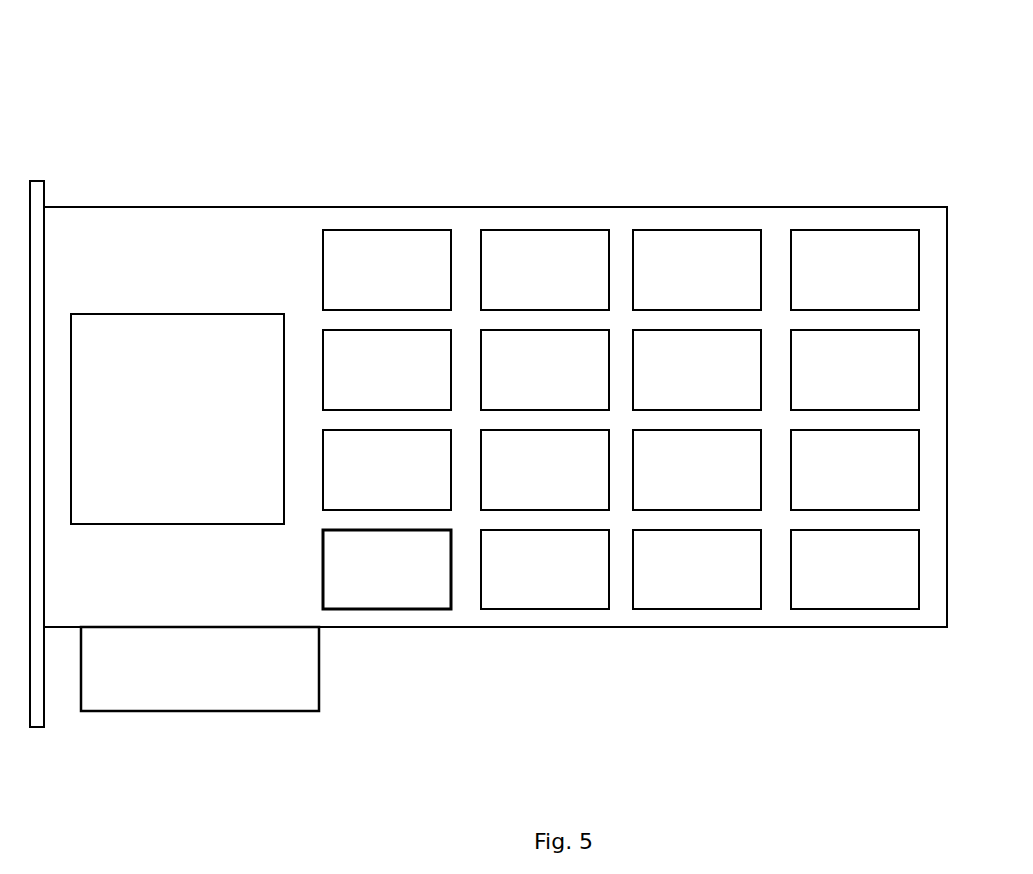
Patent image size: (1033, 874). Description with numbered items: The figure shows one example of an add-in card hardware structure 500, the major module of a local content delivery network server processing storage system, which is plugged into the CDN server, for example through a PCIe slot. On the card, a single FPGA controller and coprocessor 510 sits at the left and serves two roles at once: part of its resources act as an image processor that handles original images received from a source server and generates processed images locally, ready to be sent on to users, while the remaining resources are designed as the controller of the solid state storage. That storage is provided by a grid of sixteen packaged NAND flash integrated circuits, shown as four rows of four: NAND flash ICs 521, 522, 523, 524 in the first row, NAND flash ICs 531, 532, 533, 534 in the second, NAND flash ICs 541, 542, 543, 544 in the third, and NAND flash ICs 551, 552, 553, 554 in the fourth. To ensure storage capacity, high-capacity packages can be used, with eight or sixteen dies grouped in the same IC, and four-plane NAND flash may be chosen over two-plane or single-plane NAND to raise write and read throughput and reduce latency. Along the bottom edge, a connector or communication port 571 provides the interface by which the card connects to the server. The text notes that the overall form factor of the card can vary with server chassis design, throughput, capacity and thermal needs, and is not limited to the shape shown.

The add-in card hardware structure 500 is at (570, 38).
The FPGA controller and coprocessor 510 is at (177, 419).
The packaged NAND flash integrated circuit 521 is at (387, 270).
The packaged NAND flash integrated circuit 522 is at (545, 270).
The packaged NAND flash integrated circuit 523 is at (697, 270).
The packaged NAND flash integrated circuit 524 is at (855, 270).
The packaged NAND flash integrated circuit 531 is at (387, 370).
The packaged NAND flash integrated circuit 532 is at (545, 370).
The packaged NAND flash integrated circuit 533 is at (697, 370).
The packaged NAND flash integrated circuit 534 is at (855, 370).
The packaged NAND flash integrated circuit 541 is at (387, 470).
The packaged NAND flash integrated circuit 542 is at (545, 470).
The packaged NAND flash integrated circuit 543 is at (697, 470).
The packaged NAND flash integrated circuit 544 is at (855, 470).
The packaged NAND flash integrated circuit 551 is at (387, 569).
The packaged NAND flash integrated circuit 552 is at (545, 569).
The packaged NAND flash integrated circuit 553 is at (697, 569).
The packaged NAND flash integrated circuit 554 is at (855, 569).
The connector or communication port 571 is at (200, 669).